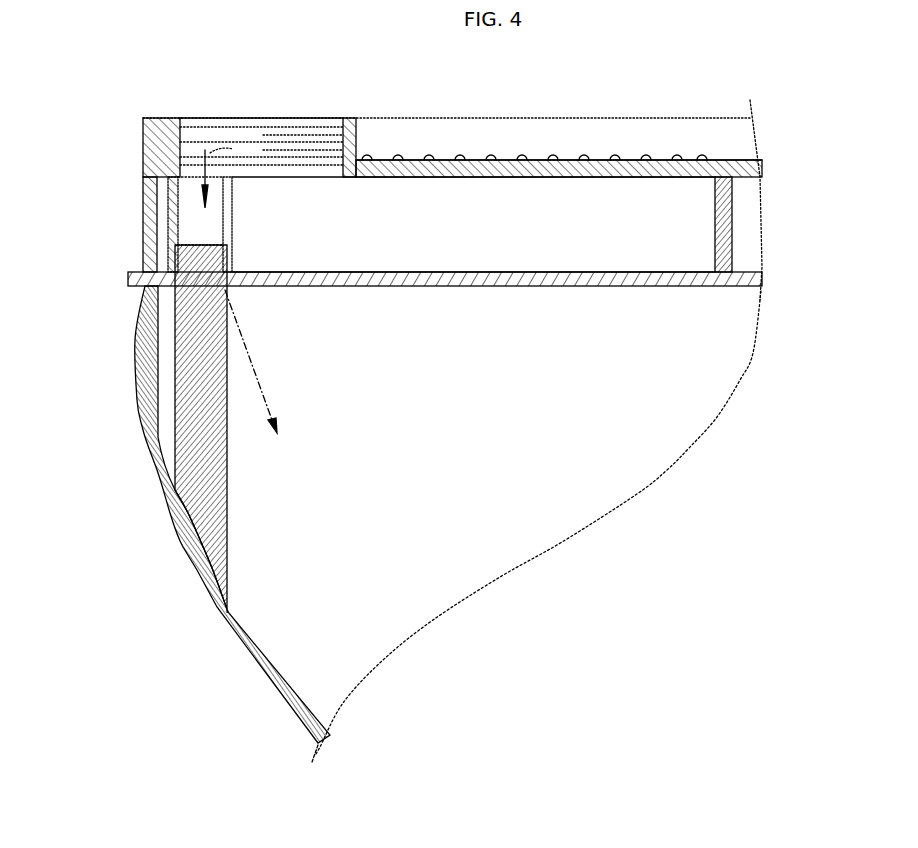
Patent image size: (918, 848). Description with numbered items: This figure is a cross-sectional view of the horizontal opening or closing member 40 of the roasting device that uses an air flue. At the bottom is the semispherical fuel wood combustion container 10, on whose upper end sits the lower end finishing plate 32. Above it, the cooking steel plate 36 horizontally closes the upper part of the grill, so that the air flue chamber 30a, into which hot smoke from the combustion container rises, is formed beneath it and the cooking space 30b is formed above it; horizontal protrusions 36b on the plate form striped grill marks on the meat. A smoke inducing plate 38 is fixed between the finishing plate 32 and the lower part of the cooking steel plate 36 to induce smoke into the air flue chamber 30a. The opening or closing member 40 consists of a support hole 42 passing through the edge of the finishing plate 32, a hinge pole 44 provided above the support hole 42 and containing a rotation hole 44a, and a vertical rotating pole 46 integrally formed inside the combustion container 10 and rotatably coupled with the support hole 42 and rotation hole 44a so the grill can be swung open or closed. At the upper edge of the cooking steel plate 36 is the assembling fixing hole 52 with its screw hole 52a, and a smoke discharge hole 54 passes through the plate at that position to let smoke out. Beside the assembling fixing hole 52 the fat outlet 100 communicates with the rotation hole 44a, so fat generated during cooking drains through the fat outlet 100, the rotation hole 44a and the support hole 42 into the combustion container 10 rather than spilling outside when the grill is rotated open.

The fuel wood combustion container 10 is at (290, 708).
The air flue chamber 30a is at (583, 223).
The cooking space 30b is at (620, 125).
The lower end finishing plate 32 is at (690, 286).
The cooking steel plate 36 is at (532, 160).
The horizontal protrusions 36b is at (466, 156).
The smoke inducing plate 38 is at (720, 227).
The horizontal opening or closing member 40 is at (180, 430).
The support hole 42 is at (180, 327).
The hinge pole 44 is at (168, 232).
The rotation hole 44a is at (190, 203).
The vertical rotating pole 46 is at (173, 453).
The assembling fixing hole 52 is at (356, 143).
The screw hole 52a is at (322, 165).
The smoke discharge hole 54 is at (320, 163).
The fat outlet 100 is at (205, 150).